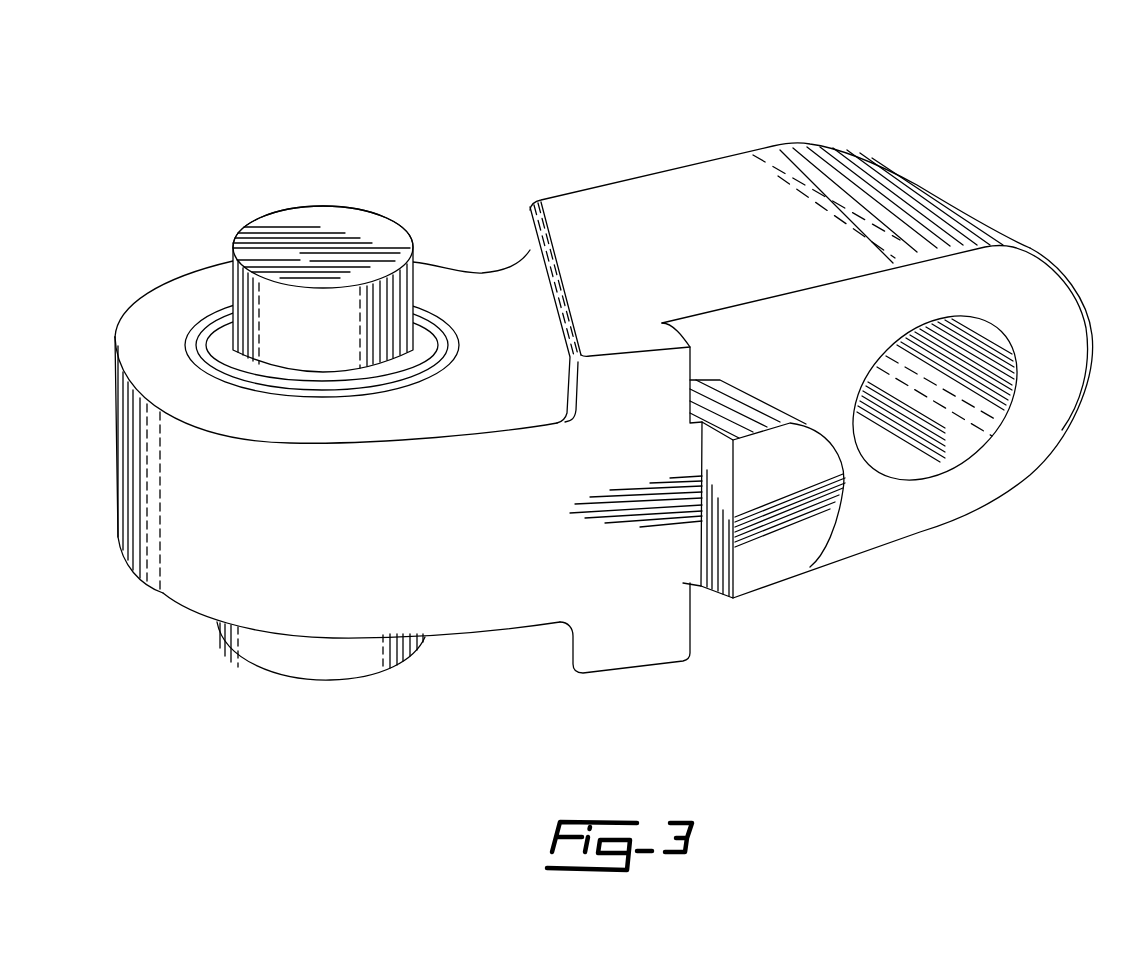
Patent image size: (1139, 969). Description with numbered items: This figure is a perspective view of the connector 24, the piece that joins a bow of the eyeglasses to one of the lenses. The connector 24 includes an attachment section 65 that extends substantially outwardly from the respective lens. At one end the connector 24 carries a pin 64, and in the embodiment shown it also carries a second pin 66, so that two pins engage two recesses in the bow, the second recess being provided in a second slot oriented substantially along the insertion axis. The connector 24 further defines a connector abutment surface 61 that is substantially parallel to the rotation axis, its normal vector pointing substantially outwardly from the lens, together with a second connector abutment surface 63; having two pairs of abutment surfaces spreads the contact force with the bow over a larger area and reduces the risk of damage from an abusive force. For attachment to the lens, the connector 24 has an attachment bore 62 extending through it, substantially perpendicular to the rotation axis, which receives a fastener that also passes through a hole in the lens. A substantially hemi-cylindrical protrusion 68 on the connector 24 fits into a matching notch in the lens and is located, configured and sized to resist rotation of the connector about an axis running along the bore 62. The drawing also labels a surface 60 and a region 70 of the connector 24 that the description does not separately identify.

The connector 24 is at (190, 155).
The top face 60 is at (647, 192).
The connector abutment surface 61 is at (530, 250).
The attachment bore 62 is at (968, 330).
The second connector abutment surface 63 is at (560, 650).
The pin 64 is at (323, 220).
The attachment section 65 is at (127, 312).
The second pin 66 is at (330, 660).
The protrusion 68 is at (780, 582).
The arm 70 is at (910, 530).